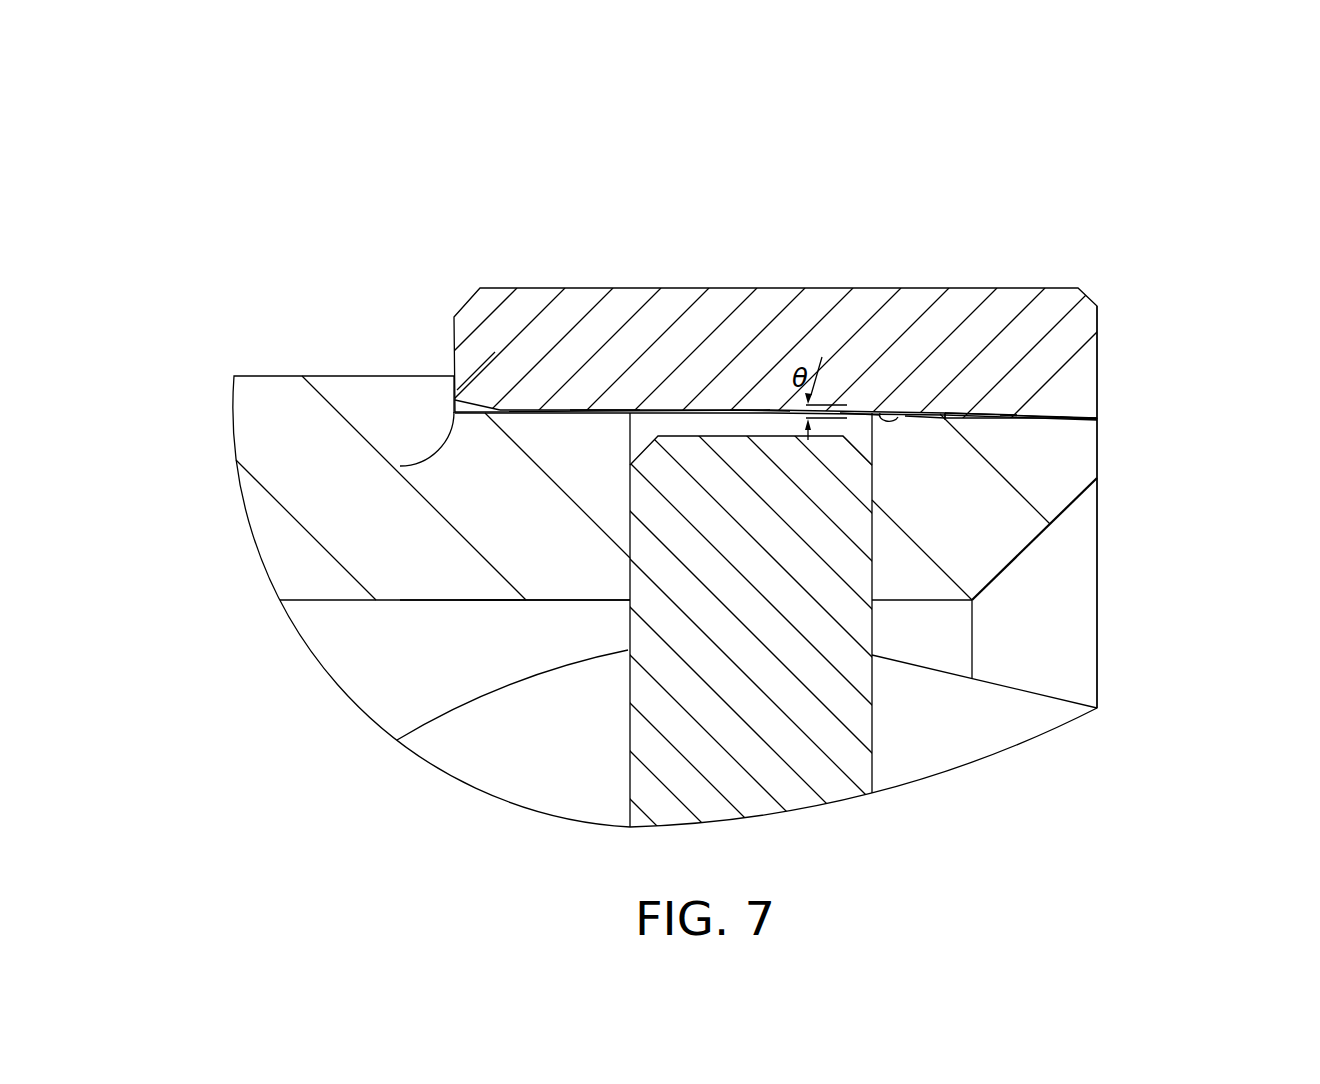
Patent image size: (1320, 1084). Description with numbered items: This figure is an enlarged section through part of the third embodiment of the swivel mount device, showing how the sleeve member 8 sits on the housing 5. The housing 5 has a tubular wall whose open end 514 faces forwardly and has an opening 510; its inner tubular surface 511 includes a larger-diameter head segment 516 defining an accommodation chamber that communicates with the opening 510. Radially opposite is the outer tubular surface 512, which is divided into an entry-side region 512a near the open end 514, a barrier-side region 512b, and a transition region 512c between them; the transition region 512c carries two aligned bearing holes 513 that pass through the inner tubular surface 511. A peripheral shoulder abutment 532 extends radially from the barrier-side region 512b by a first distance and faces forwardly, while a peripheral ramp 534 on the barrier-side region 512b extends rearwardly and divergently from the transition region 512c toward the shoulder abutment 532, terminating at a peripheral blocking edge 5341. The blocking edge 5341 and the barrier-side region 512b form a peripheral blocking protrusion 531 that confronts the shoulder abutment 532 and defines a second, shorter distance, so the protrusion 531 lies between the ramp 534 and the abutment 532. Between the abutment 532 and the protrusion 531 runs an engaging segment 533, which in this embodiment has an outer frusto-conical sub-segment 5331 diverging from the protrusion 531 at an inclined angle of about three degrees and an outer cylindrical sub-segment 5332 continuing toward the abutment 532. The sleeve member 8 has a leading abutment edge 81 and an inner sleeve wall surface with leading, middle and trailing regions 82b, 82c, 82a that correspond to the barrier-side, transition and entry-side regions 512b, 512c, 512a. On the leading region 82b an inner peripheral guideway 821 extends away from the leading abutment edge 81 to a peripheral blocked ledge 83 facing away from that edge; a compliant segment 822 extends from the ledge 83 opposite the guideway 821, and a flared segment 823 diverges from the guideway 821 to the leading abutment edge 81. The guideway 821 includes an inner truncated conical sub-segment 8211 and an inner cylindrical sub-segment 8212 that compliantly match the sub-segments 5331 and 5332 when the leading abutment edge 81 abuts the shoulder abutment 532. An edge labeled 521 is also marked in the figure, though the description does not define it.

The housing 5 is at (262, 365).
The sleeve member 8 is at (1106, 324).
The leading abutment edge 81 is at (483, 370).
The trailing region 82a is at (1020, 418).
The leading region 82b is at (528, 410).
The middle region 82c is at (682, 410).
The peripheral blocked ledge 83 is at (955, 420).
The inner peripheral guideway 821 is at (597, 410).
The compliant segment 822 is at (882, 410).
The flared segment 823 is at (400, 466).
The inner truncated conical sub-segment 8211 is at (862, 410).
The inner cylindrical sub-segment 8212 is at (758, 422).
The opening 510 is at (1100, 633).
The inner tubular surface 511 is at (500, 612).
The outer tubular surface 512 is at (1018, 398).
The entry-side region 512a is at (1154, 470).
The barrier-side region 512b is at (566, 268).
The transition region 512c is at (692, 320).
The bearing holes 513 is at (768, 410).
The open end 514 is at (1098, 435).
The head segment 516 is at (457, 600).
The edge 521 is at (1081, 430).
The peripheral blocking protrusion 531 is at (937, 413).
The peripheral shoulder abutment 532 is at (489, 288).
The engaging segment 533 is at (632, 290).
The peripheral ramp 534 is at (1003, 410).
The outer frusto-conical sub-segment 5331 is at (884, 258).
The outer cylindrical sub-segment 5332 is at (752, 275).
The peripheral blocking edge 5341 is at (953, 418).